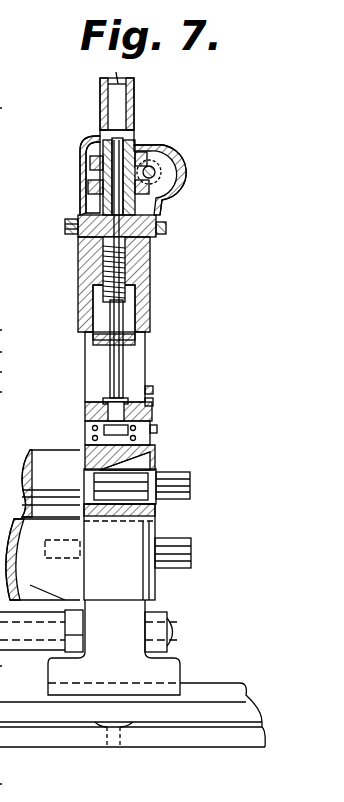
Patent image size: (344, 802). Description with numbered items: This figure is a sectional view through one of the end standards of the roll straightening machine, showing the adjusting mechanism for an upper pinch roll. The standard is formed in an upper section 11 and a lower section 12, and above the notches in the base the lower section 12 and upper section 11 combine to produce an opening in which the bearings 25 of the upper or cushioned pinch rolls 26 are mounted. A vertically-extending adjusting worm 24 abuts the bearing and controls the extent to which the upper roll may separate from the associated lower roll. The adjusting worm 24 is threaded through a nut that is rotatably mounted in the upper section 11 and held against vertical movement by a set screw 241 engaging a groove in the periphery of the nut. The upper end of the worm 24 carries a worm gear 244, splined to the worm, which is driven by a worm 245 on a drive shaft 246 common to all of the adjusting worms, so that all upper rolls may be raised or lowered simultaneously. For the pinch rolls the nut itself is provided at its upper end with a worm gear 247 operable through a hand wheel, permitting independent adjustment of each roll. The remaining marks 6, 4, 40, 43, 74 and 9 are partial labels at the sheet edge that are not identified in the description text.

The upper section 11 is at (150, 312).
The adjusting worm 24 is at (124, 348).
The bearings 25 is at (155, 462).
The upper pinch rolls 26 is at (50, 448).
The lower section 12 is at (150, 605).
The worm gear 244 is at (92, 178).
The worm 245 is at (156, 172).
The drive shaft 246 is at (152, 168).
The worm gear 247 is at (160, 200).
The frame 6 is at (4, 109).
The shaft 4 is at (5, 328).
The set screw 241 is at (15, 350).
The roll 40 is at (10, 371).
The gear 43 is at (10, 391).
The shaft 74 is at (8, 665).
The base 9 is at (2, 783).